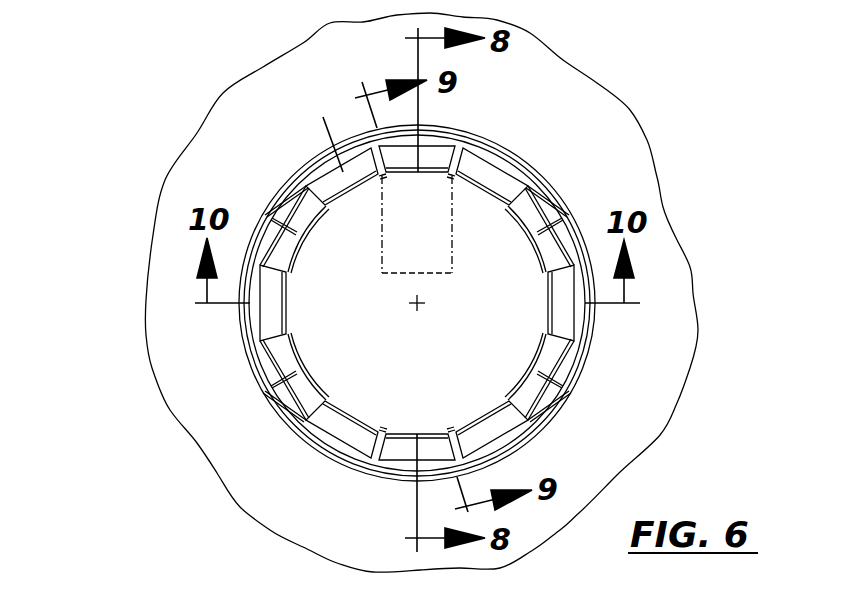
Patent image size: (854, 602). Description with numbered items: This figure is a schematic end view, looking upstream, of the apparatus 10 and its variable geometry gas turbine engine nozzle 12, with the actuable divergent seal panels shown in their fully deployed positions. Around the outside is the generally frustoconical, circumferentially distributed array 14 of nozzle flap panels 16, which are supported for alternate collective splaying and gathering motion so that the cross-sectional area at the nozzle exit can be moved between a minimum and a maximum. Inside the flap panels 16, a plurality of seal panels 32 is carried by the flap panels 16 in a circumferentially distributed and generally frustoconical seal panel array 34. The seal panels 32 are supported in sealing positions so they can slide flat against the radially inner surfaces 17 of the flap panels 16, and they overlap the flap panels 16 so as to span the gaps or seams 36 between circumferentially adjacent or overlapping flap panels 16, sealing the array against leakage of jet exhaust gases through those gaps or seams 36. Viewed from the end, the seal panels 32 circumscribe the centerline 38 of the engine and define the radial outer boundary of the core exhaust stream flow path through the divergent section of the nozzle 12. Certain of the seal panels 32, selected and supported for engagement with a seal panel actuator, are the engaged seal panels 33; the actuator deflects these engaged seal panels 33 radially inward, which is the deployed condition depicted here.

The apparatus 10 is at (160, 125).
The variable geometry gas turbine engine nozzle 12 is at (554, 172).
The circumferentially distributed array of nozzle flap panels 14 is at (498, 136).
The nozzle flap panels 16 is at (578, 226).
The radially inner surfaces 17 is at (432, 145).
The seal panels 32 is at (393, 157).
The engaged seal panels 33 is at (308, 232).
The seal panel array 34 is at (283, 367).
The gaps or seams 36 is at (267, 217).
The centerline 38 is at (421, 305).